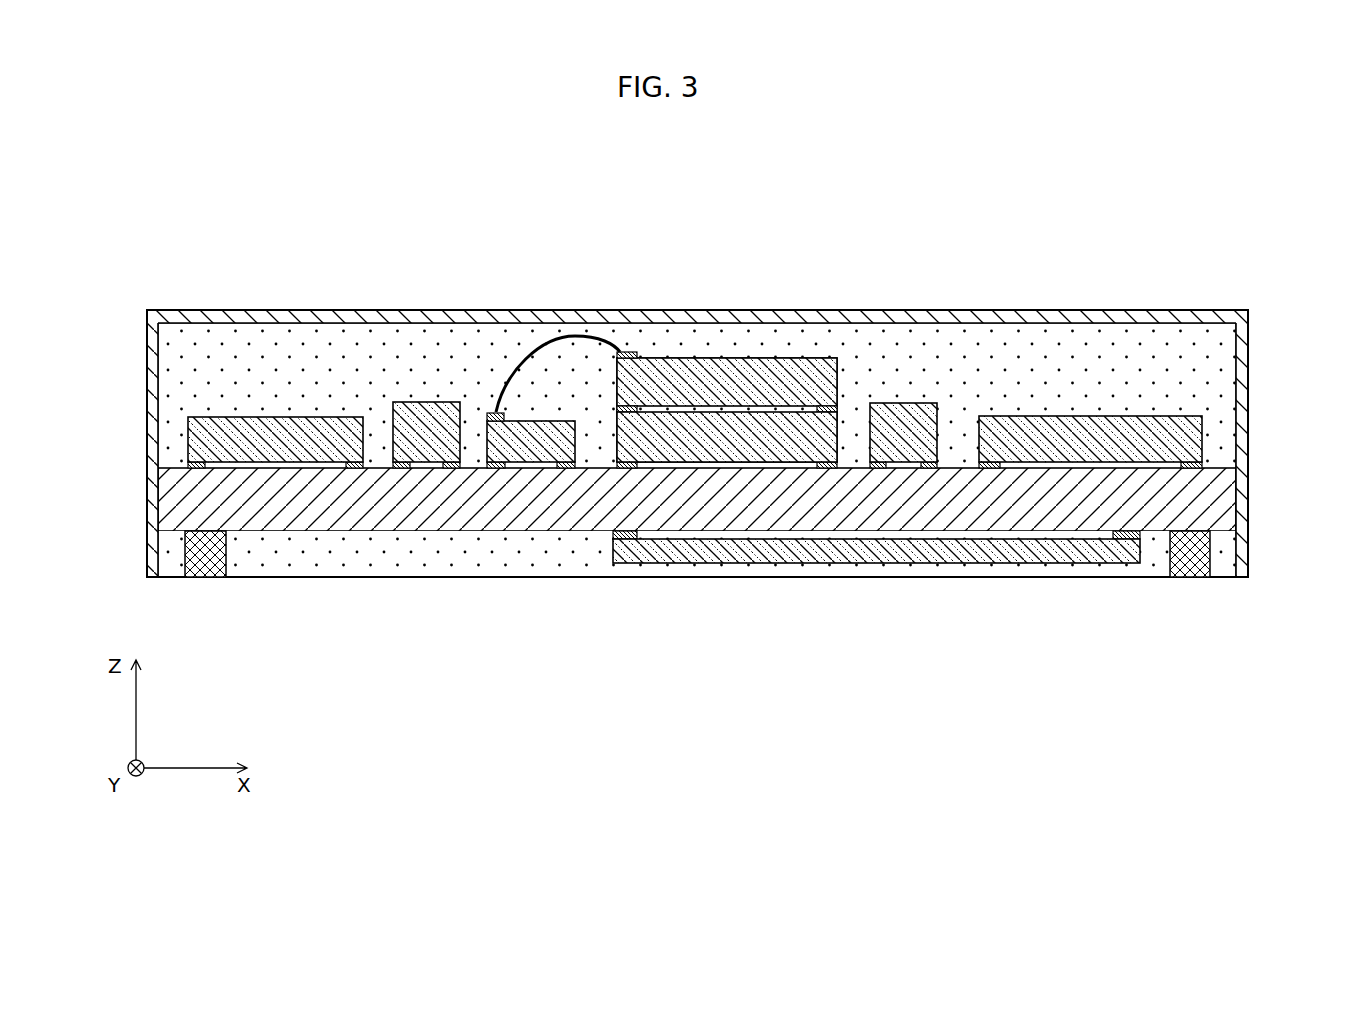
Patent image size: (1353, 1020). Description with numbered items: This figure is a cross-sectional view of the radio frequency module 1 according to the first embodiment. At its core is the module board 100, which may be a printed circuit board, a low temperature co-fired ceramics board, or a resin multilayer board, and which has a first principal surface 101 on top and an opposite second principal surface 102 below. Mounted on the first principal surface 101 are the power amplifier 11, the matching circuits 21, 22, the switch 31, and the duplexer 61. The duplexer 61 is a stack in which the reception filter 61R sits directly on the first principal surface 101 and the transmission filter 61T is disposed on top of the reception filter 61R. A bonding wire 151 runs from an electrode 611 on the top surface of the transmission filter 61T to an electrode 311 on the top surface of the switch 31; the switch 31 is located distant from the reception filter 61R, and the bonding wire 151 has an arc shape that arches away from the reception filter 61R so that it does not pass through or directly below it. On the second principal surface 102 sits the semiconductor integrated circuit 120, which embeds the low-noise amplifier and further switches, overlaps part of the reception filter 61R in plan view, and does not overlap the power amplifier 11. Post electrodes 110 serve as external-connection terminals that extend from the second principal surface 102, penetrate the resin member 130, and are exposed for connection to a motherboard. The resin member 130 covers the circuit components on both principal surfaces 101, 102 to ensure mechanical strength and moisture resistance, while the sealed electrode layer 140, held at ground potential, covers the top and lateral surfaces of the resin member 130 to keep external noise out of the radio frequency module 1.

The radio frequency module 1 is at (1017, 225).
The power amplifier 11 is at (262, 417).
The matching circuit 21 is at (420, 402).
The matching circuit 22 is at (895, 403).
The switch 31 is at (481, 440).
The electrode 311 is at (494, 412).
The duplexer 61 is at (770, 272).
The transmission filter 61T is at (692, 358).
The reception filter 61R is at (738, 412).
The electrode 611 is at (632, 352).
The bonding wire 151 is at (571, 336).
The module board 100 is at (165, 495).
The first principal surface 101 is at (172, 465).
The second principal surface 102 is at (170, 535).
The post electrode 110 is at (1193, 576).
The semiconductor integrated circuit 120 is at (910, 564).
The resin member 130 is at (1232, 441).
The sealed electrode layer 140 is at (1183, 313).